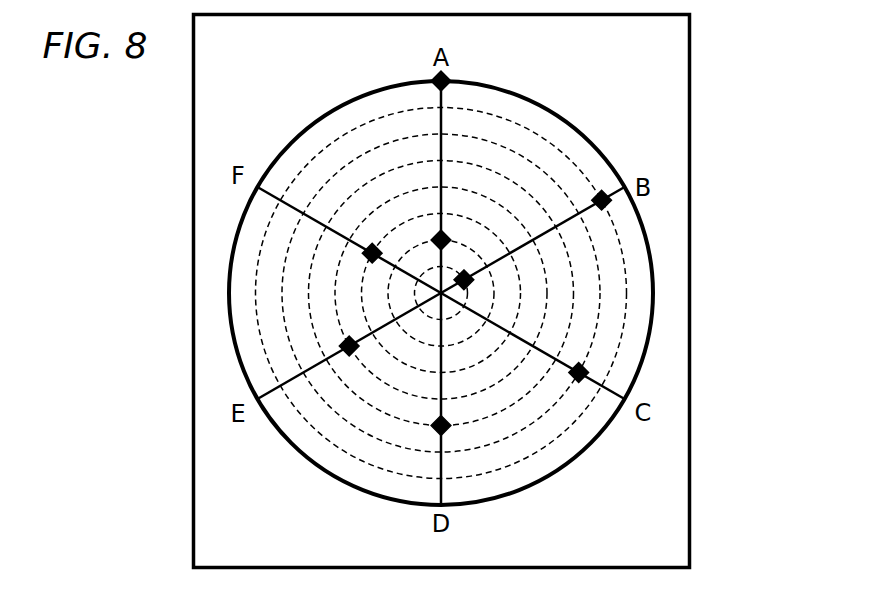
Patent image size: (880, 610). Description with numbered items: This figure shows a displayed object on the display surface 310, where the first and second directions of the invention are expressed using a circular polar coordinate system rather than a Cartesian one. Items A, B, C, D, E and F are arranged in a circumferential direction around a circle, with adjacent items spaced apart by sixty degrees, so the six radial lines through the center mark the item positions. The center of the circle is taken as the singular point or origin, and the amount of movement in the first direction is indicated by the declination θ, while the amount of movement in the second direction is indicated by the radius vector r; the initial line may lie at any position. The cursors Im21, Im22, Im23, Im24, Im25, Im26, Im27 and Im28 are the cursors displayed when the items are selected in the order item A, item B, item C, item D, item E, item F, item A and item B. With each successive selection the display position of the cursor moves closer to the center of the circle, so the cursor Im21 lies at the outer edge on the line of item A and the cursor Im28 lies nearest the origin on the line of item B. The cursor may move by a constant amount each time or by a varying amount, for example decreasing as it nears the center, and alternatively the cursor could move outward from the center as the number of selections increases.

The display surface 310 is at (690, 84).
The cursor Im21 is at (449, 78).
The cursor Im22 is at (601, 196).
The cursor Im23 is at (579, 376).
The cursor Im24 is at (445, 427).
The cursor Im25 is at (349, 350).
The cursor Im26 is at (370, 251).
The cursor Im27 is at (440, 238).
The cursor Im28 is at (466, 274).